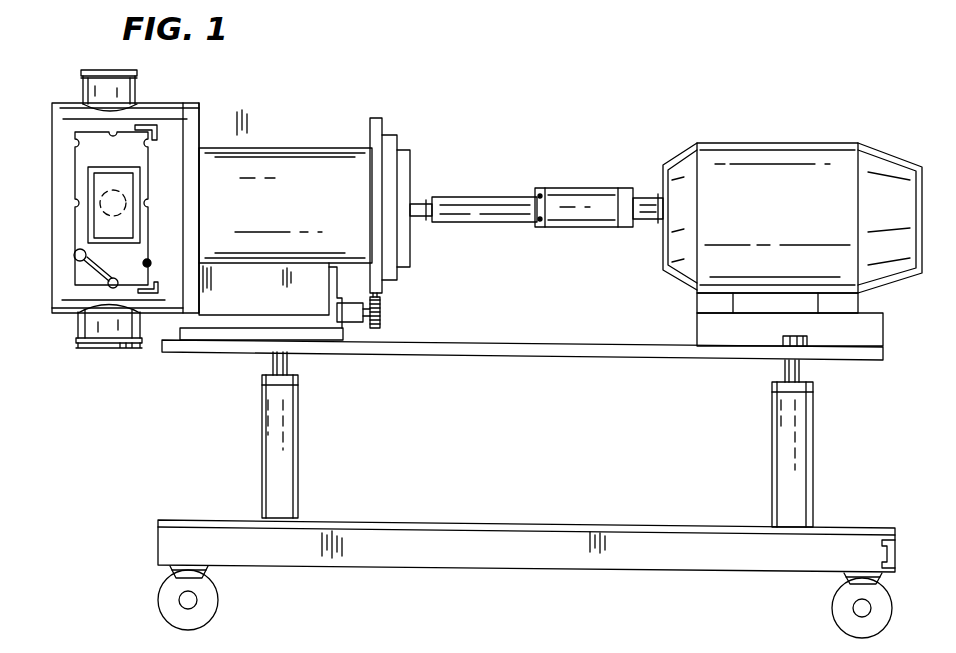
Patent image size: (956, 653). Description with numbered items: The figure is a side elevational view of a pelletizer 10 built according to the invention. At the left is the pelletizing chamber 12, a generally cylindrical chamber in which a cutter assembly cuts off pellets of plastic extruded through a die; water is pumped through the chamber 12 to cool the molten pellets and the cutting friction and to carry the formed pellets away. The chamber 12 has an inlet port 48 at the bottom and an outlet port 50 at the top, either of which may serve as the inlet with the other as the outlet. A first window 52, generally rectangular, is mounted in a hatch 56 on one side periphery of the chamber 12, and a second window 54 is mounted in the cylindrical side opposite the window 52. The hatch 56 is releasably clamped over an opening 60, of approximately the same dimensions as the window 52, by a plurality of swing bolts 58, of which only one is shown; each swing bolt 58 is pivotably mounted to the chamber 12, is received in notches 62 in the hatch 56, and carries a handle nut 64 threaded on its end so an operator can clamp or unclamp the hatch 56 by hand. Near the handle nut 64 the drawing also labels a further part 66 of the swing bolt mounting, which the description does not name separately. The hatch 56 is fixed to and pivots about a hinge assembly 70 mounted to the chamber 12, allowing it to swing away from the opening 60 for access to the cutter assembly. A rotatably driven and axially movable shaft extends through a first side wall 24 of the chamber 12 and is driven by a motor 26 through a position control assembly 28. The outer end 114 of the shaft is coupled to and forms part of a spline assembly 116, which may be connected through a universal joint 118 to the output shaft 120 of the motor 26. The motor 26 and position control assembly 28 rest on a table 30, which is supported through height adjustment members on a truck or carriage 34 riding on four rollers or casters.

The pelletizer 10 is at (566, 120).
The pelletizing chamber 12 is at (68, 303).
The wall of the chamber 24 is at (175, 150).
The motor 26 is at (770, 160).
The position control assembly 28 is at (322, 170).
The table 30 is at (555, 353).
The truck or carriage 34 is at (497, 566).
The inlet port 48 is at (97, 323).
The outlet port 50 is at (100, 86).
The first window 52 is at (123, 232).
The second window 54 is at (90, 187).
The hatch 56 is at (90, 145).
The swing bolt 58 is at (150, 266).
The opening 60 is at (95, 230).
The notches 62 is at (140, 124).
The handle nut 64 is at (84, 268).
The pivot 66 is at (113, 289).
The hinge assembly 70 is at (183, 103).
The outer end of the shaft 114 is at (420, 214).
The spline assembly 116 is at (473, 206).
The universal joint 118 is at (583, 210).
The output shaft 120 is at (658, 222).